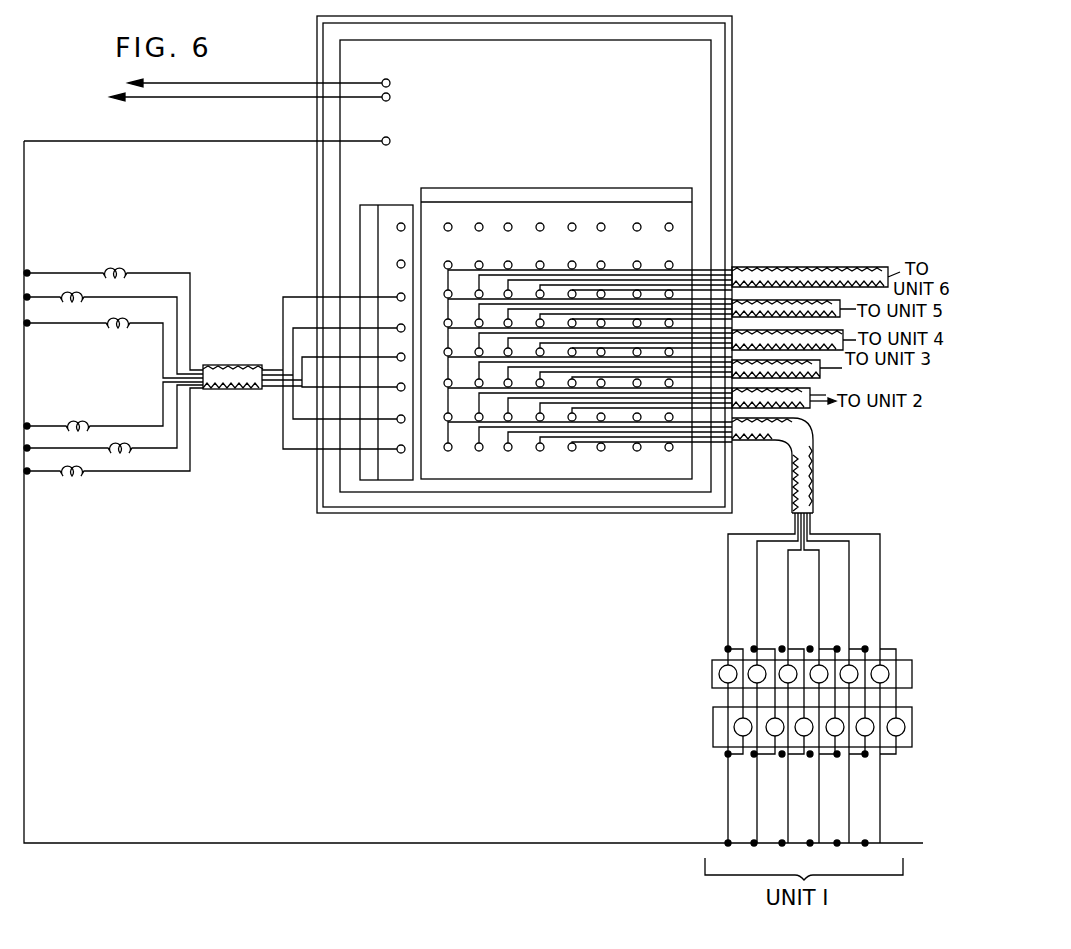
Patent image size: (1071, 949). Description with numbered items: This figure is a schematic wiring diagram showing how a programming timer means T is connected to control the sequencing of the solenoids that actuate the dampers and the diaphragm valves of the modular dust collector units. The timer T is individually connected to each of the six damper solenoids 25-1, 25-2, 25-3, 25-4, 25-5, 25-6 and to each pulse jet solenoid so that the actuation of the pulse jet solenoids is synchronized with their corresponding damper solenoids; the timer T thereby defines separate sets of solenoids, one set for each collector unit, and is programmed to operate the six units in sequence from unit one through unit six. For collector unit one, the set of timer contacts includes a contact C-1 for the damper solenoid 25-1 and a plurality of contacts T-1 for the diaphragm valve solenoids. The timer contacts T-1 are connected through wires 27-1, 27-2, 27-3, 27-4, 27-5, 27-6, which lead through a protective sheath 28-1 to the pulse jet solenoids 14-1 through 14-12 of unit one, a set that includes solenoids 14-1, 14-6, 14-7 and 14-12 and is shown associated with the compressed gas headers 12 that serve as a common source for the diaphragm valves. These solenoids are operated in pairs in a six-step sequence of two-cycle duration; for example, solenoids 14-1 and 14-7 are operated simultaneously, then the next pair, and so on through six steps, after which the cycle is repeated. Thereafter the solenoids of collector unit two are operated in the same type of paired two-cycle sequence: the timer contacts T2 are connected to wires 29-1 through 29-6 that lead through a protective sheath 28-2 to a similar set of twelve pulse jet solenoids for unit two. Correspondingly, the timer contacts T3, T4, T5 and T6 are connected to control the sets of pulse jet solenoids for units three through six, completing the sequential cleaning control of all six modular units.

The programming timer means T is at (741, 182).
The timer contact C-1 is at (402, 464).
The timer contacts T-1 is at (450, 452).
The timer contacts T2 is at (477, 414).
The timer contacts T3 is at (444, 383).
The timer contacts T4 is at (444, 353).
The timer contacts T5 is at (444, 325).
The timer contacts T6 is at (444, 295).
The damper solenoid 25-1 is at (77, 474).
The damper solenoid 25-2 is at (132, 450).
The damper solenoid 25-3 is at (77, 404).
The damper solenoid 25-4 is at (119, 326).
The damper solenoid 25-5 is at (69, 294).
The damper solenoid 25-6 is at (120, 271).
The wire 27-1 is at (728, 541).
The wire 27-2 is at (757, 576).
The wire 27-3 is at (788, 606).
The wire 27-4 is at (819, 567).
The wire 27-5 is at (849, 594).
The wire 27-6 is at (880, 617).
The protective sheath 28-1 is at (814, 503).
The protective sheath 28-2 is at (790, 414).
The wire 29-1 is at (797, 406).
The wire 29-6 is at (823, 395).
The compressed gas header 12 is at (712, 660).
The pulse jet solenoid 14-1 is at (718, 677).
The pulse jet solenoid 14-6 is at (882, 675).
The pulse jet solenoid 14-7 is at (736, 729).
The pulse jet solenoid 14-12 is at (897, 738).